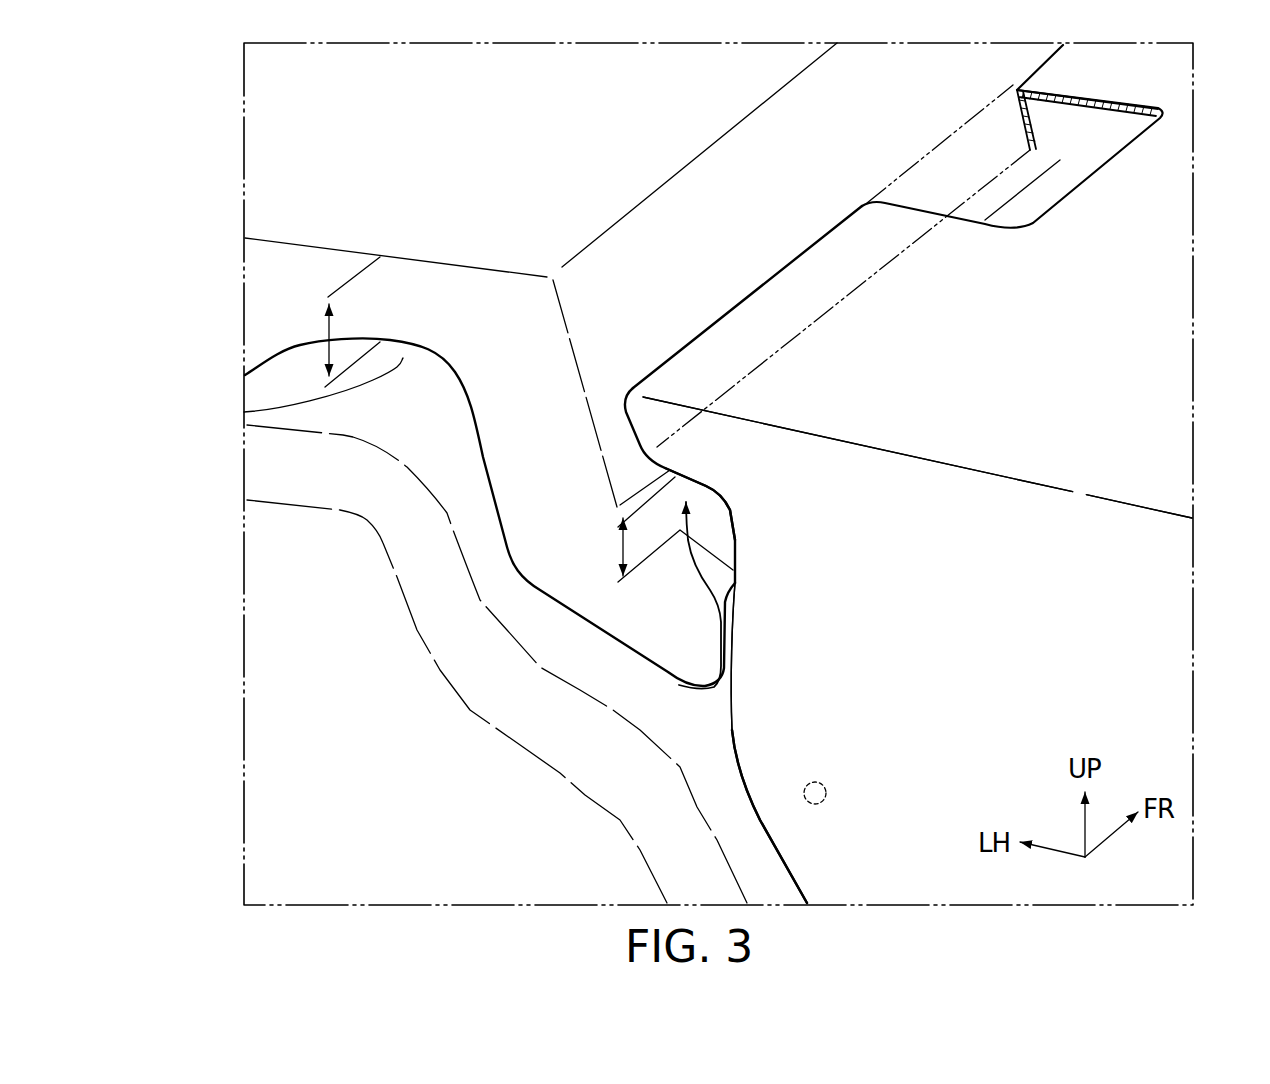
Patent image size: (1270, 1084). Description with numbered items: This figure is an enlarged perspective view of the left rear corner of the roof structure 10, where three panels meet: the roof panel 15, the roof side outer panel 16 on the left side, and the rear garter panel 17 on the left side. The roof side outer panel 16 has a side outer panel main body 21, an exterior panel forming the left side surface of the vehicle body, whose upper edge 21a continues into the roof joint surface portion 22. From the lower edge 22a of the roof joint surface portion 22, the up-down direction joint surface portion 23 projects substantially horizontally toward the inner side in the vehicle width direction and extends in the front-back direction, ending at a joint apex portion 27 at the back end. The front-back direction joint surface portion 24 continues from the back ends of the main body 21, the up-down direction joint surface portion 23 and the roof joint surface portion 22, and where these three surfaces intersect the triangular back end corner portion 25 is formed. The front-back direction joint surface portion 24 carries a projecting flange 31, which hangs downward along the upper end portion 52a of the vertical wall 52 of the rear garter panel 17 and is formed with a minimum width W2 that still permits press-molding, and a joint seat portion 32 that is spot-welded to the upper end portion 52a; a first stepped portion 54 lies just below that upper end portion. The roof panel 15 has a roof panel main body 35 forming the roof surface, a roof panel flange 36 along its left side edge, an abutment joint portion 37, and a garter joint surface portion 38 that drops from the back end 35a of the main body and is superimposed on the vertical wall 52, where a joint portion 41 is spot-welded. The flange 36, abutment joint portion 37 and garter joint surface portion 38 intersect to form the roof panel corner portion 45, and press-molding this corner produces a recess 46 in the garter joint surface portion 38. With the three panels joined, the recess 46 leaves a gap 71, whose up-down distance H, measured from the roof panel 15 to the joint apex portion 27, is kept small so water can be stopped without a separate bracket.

The roof structure 10 is at (213, 111).
The roof panel 15 is at (1097, 359).
The roof side outer panel 16 is at (509, 116).
The rear garter panel 17 is at (301, 655).
The side outer panel main body 21 is at (663, 100).
The upper edge 21a is at (787, 85).
The roof joint surface portion 22 is at (838, 93).
The lower edge 22a is at (1040, 168).
The up-down direction joint surface portion 23 is at (718, 530).
The joint apex portion 27 is at (769, 743).
The front-back direction joint surface portion 24 is at (479, 454).
The back end corner portion 25 is at (622, 507).
The projecting flange 31 is at (523, 537).
The joint seat portion 32 is at (258, 350).
The roof panel main body 35 is at (1137, 403).
The back end 35a is at (1128, 497).
The roof panel flange 36 is at (1040, 122).
The abutment joint portion 37 is at (800, 253).
The garter joint surface portion 38 is at (787, 713).
The joint portion 41 is at (827, 797).
The roof panel corner portion 45 is at (635, 395).
The recess 46 is at (713, 503).
The vertical wall 52 is at (310, 565).
The upper end portion 52a is at (244, 412).
The first stepped portion 54 is at (387, 528).
The gap 71 is at (735, 610).
The minimum width W2 is at (323, 332).
The distance H is at (622, 550).